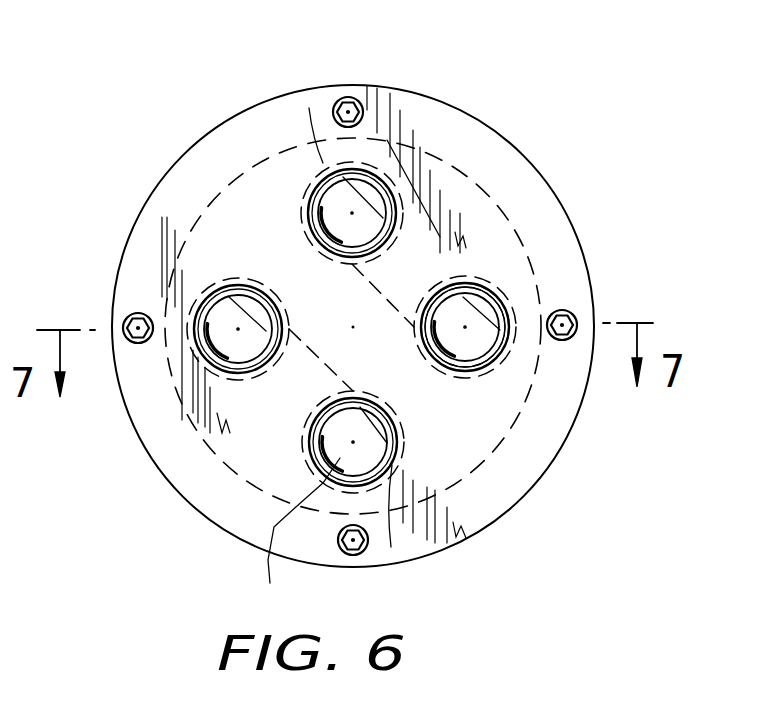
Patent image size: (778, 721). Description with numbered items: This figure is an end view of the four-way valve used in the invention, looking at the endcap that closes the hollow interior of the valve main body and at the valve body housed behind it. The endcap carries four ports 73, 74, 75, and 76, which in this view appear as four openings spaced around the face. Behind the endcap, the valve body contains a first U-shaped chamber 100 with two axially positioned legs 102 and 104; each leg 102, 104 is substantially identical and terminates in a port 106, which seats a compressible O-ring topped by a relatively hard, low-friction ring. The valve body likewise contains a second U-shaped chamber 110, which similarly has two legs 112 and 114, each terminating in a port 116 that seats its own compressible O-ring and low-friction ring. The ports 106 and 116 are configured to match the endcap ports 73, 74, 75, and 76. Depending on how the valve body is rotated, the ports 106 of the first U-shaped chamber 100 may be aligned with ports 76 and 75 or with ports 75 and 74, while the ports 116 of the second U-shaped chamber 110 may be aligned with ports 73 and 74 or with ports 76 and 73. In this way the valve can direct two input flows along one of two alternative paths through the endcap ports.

The port 73 is at (397, 197).
The port 74 is at (480, 328).
The port 75 is at (392, 548).
The port 76 is at (190, 377).
The first U-shaped chamber 100 is at (208, 505).
The leg 102 is at (222, 318).
The leg 104 is at (304, 532).
The port 106 is at (233, 275).
The second U-shaped chamber 110 is at (547, 200).
The leg 112 is at (352, 205).
The leg 114 is at (500, 318).
The port 116 is at (292, 80).